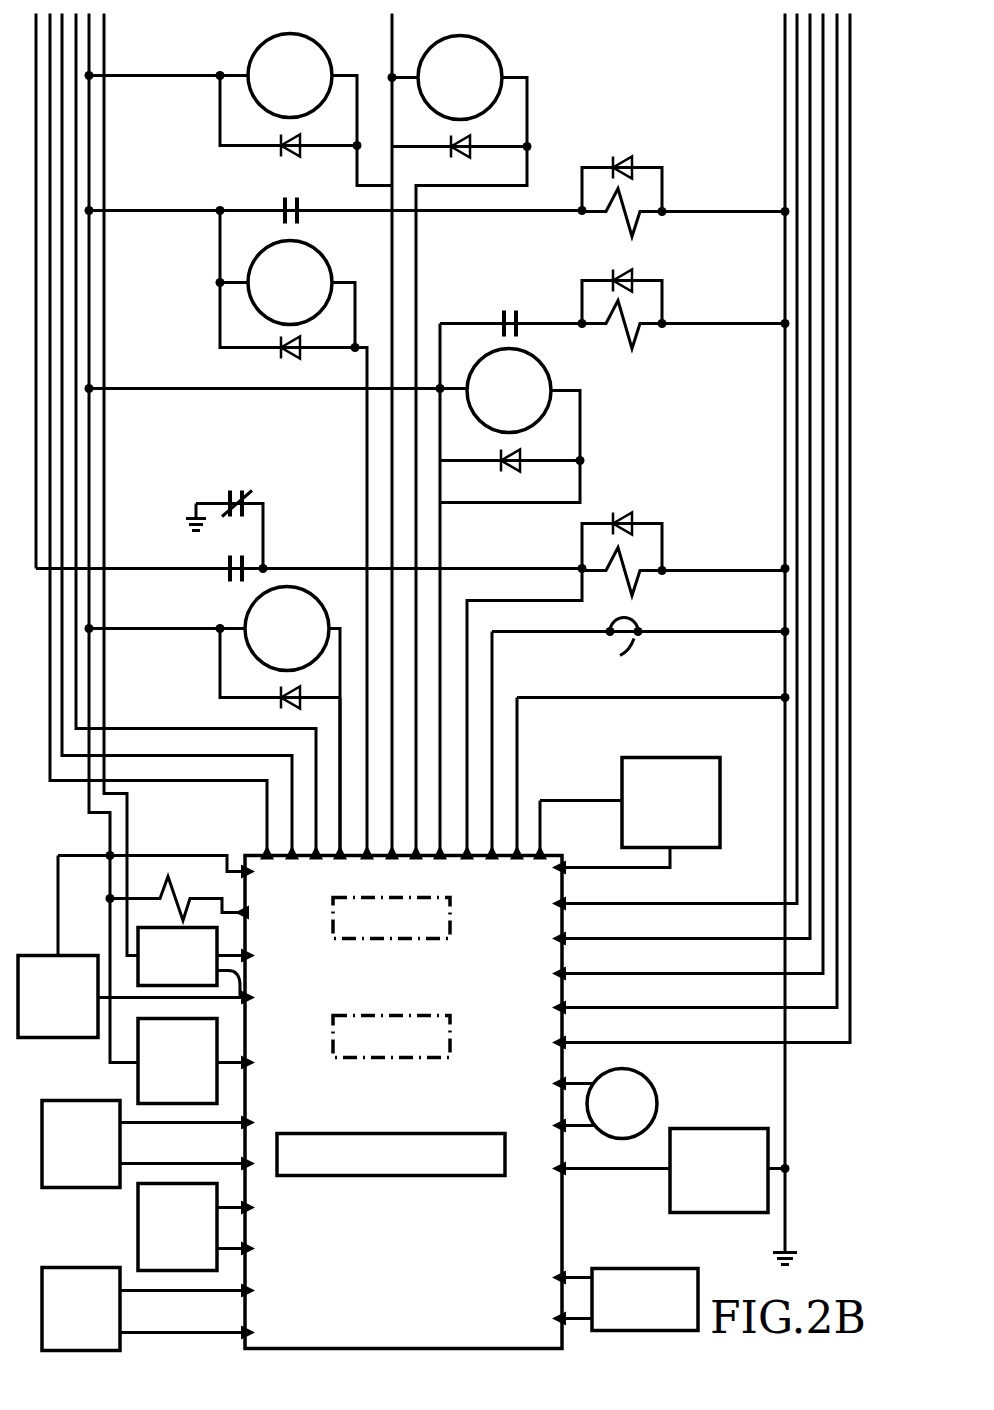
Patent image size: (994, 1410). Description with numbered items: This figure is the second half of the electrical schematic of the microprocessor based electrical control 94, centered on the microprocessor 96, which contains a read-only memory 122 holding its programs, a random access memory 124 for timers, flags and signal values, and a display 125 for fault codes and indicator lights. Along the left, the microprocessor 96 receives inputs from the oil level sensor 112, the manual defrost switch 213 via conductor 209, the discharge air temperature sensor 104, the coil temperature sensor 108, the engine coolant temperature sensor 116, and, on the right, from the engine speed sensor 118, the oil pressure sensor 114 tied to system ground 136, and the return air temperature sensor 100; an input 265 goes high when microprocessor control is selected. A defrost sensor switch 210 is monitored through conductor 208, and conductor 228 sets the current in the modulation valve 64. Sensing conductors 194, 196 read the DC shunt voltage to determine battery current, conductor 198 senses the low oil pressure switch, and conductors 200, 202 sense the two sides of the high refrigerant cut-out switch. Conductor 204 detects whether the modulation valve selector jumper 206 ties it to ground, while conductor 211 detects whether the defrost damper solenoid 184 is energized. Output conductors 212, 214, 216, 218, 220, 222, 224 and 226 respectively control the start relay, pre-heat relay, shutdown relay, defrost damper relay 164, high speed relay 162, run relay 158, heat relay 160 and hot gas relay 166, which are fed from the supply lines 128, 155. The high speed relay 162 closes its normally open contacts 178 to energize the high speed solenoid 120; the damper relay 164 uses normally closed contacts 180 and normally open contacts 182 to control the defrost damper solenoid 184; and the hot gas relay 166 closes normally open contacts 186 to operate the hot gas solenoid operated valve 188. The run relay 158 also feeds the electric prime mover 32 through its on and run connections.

The electric prime mover 32 is at (660, 757).
The modulation valve 64 is at (165, 890).
The microprocessor based electrical control 94 is at (141, 1167).
The microprocessor 96 is at (564, 1233).
The return air temperature sensor 100 is at (652, 1268).
The discharge air temperature sensor 104 is at (63, 1190).
The coil temperature sensor 108 is at (138, 1212).
The oil level sensor 112 is at (70, 1040).
The oil pressure sensor 114 is at (670, 1190).
The engine coolant temperature sensor 116 is at (78, 1267).
The engine speed sensor 118 is at (652, 1113).
The high speed solenoid 120 is at (626, 225).
The read-only memory 122 is at (450, 930).
The random access memory 124 is at (450, 1050).
The display 125 is at (433, 1133).
The power line 128 is at (106, 293).
The system ground 136 is at (787, 1147).
The power line 155 is at (92, 245).
The run relay 158 is at (227, 94).
The heat relay 160 is at (467, 435).
The high speed relay 162 is at (291, 285).
The defrost damper relay 164 is at (224, 717).
The hot gas relay 166 is at (340, 590).
The normally open contacts 178 is at (285, 200).
The normally closed contacts 180 is at (236, 495).
The normally open contacts 182 is at (228, 557).
The defrost damper solenoid 184 is at (645, 560).
The normally open contacts 186 is at (505, 314).
The hot gas solenoid operated valve 188 is at (640, 312).
The conductor 194 is at (797, 1048).
The conductor 196 is at (773, 1010).
The conductor 198 is at (778, 975).
The conductor 200 is at (772, 940).
The conductor 202 is at (768, 905).
The conductor 204 is at (598, 636).
The modulation valve selector jumper 206 is at (615, 649).
The conductor 208 is at (240, 950).
The conductor 209 is at (237, 1058).
The defrost sensor switch 210 is at (240, 972).
The conductor 211 is at (480, 600).
The conductor 212 is at (88, 802).
The manual defrost switch 213 is at (138, 1078).
The conductor 214 is at (72, 762).
The conductor 216 is at (118, 728).
The conductor 218 is at (340, 720).
The conductor 220 is at (366, 408).
The conductor 222 is at (357, 166).
The conductor 224 is at (527, 170).
The conductor 226 is at (458, 505).
The conductor 228 is at (240, 900).
The input 265 is at (243, 866).